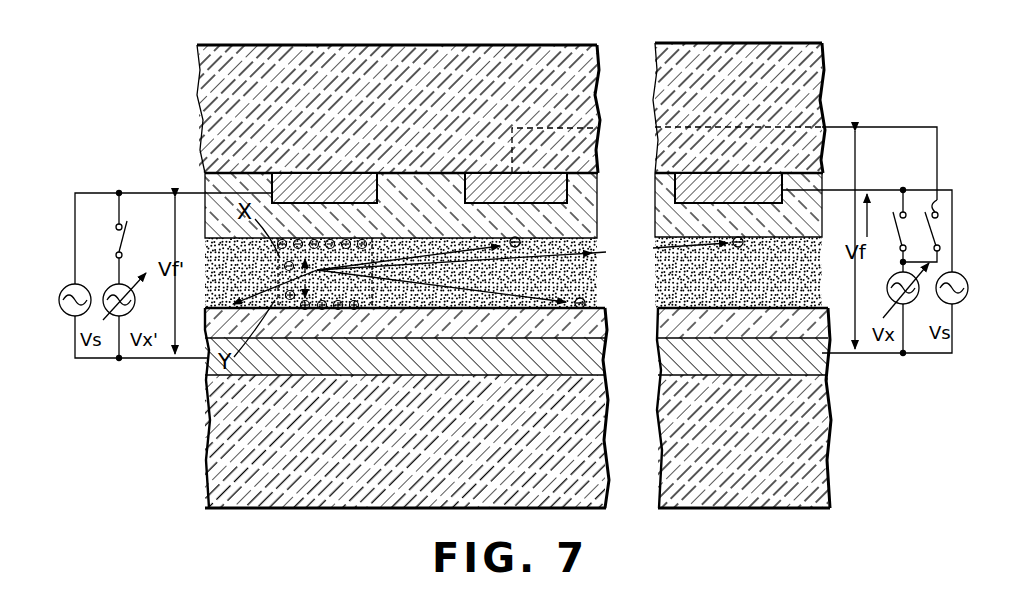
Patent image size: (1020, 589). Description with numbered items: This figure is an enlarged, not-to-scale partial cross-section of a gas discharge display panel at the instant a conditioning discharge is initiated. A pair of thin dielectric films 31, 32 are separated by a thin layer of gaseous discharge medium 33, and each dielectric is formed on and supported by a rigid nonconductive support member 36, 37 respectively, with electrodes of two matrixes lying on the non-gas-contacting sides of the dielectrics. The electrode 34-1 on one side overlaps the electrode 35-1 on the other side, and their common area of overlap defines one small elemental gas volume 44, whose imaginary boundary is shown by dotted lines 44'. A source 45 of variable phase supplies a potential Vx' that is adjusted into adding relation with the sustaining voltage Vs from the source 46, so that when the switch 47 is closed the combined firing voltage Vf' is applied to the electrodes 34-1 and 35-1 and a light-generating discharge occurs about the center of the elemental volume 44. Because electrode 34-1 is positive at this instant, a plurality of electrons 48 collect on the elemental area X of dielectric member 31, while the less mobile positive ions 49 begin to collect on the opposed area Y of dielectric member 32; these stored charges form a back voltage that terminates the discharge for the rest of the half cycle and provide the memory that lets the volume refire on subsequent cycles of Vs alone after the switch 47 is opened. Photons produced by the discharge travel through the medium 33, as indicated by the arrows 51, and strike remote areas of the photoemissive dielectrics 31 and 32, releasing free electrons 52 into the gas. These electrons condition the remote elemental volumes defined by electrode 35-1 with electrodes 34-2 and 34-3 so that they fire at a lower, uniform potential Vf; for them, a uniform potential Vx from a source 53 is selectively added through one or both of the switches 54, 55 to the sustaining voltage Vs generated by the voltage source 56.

The dielectric film 31 is at (823, 125).
The dielectric film 32 is at (807, 330).
The gaseous discharge medium 33 is at (662, 283).
The electrode 34-1 is at (293, 178).
The electrode 34-2 is at (490, 186).
The electrode 34-3 is at (700, 183).
The electrode 35-1 is at (607, 374).
The rigid nonconductive support member 36 is at (812, 62).
The rigid nonconductive support member 37 is at (825, 482).
The elemental gas volume 44 is at (401, 348).
The dotted lines 44' is at (319, 354).
The source of variable phase 45 is at (113, 318).
The source of sustaining potential 46 is at (68, 318).
The switch 47 is at (117, 244).
The electrons 48 is at (313, 235).
The positive ions 49 is at (306, 305).
The arrows 51 is at (437, 287).
The electrons 52 is at (732, 240).
The source 53 is at (906, 366).
The switch 54 is at (935, 226).
The switch 55 is at (893, 222).
The voltage source 56 is at (957, 306).